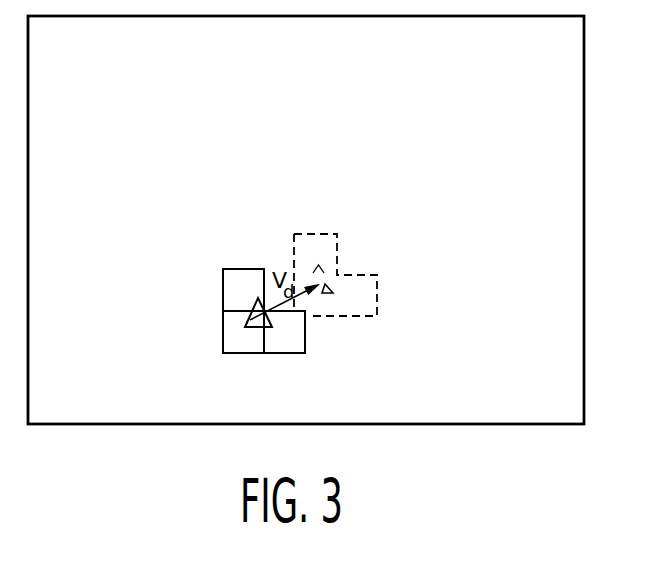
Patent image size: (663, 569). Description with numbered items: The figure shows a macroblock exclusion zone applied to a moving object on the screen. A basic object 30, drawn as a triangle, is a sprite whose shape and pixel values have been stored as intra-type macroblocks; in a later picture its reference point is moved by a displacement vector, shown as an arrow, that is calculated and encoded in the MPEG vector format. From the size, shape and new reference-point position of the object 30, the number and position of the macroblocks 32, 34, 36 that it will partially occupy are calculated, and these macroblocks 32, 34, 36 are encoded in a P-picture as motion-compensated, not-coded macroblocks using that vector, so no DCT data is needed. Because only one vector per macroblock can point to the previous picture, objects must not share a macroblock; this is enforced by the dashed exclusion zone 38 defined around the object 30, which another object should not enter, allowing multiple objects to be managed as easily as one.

The object 30 is at (254, 326).
The macroblock 32 is at (233, 283).
The macroblock 34 is at (228, 340).
The macroblock 36 is at (296, 345).
The exclusion zone 38 is at (337, 240).